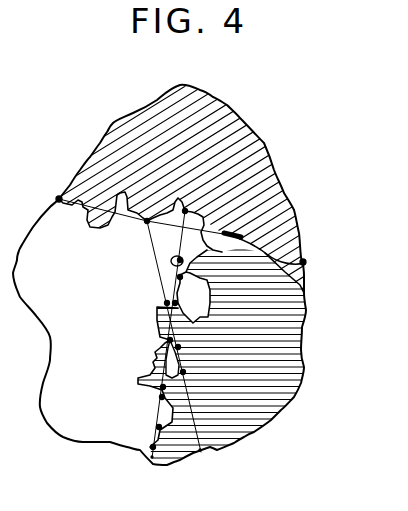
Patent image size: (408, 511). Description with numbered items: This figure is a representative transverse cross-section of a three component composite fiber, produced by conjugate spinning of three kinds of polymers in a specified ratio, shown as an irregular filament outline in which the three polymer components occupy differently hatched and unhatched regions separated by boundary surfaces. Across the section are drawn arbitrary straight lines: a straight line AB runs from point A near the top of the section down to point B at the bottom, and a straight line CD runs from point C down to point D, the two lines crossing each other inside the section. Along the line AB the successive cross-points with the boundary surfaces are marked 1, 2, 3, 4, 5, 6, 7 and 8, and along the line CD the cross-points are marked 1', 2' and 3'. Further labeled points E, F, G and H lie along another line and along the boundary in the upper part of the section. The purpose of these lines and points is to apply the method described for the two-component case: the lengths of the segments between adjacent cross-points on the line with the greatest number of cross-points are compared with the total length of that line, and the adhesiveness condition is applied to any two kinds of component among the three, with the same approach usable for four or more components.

The end point of straight line AB A is at (175, 320).
The end point of straight line AB B is at (153, 477).
The end point of straight line CD C is at (164, 336).
The end point of straight line CD D is at (207, 470).
The point E is at (128, 210).
The point F is at (236, 222).
The region G is at (225, 259).
The point H is at (316, 272).
The cross-point of line AB with boundary surface 1 is at (177, 250).
The point 2 is at (174, 280).
The point 3 is at (183, 296).
The cross-point of line CD with boundary surface 1' is at (156, 294).
The cross-point of line CD with boundary surface 2' is at (191, 346).
The cross-point of line CD with boundary surface 3' is at (195, 371).
The point 4 is at (163, 346).
The point 5 is at (163, 387).
The point 6 is at (155, 398).
The point 7 is at (152, 423).
The point 8 is at (152, 445).